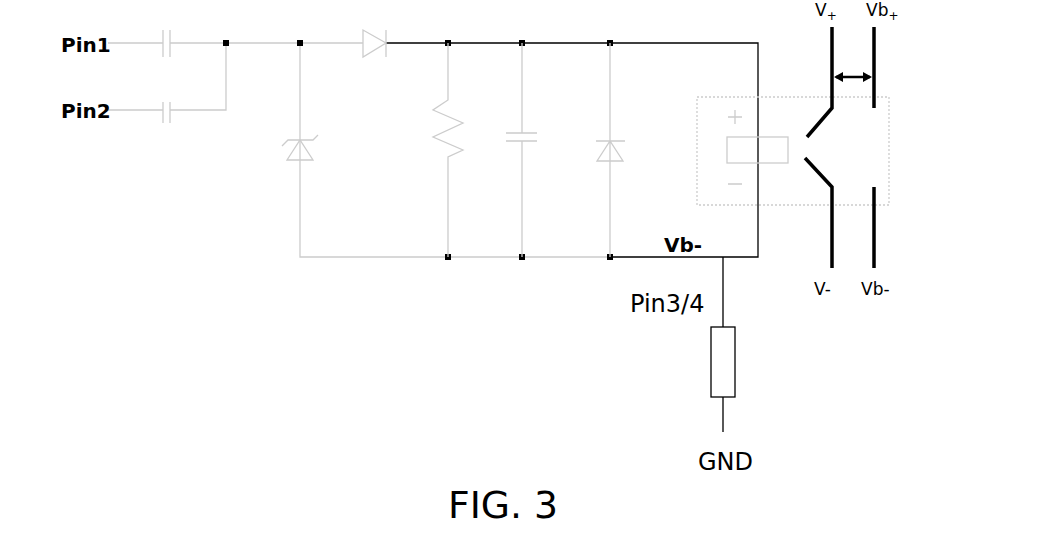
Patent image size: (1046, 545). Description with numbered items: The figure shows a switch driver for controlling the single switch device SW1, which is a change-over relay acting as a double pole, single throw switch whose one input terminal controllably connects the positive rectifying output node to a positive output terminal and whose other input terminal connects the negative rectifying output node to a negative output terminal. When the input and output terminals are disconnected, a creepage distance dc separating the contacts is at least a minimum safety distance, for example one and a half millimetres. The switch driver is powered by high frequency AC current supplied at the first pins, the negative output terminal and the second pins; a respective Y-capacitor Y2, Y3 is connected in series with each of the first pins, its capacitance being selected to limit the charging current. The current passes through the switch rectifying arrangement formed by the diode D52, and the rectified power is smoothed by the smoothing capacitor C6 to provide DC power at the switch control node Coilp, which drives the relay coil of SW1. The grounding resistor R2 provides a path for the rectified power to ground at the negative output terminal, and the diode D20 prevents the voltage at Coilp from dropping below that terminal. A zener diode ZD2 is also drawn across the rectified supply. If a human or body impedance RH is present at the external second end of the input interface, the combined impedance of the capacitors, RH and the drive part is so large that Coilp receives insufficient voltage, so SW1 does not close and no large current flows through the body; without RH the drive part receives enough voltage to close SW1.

The Y-capacitor Y2 is at (164, 32).
The Y-capacitor Y3 is at (164, 99).
The diode D52 is at (373, 32).
The zener diode ZD2 is at (283, 136).
The grounding resistor R2 is at (431, 150).
The smoothing capacitor C6 is at (511, 150).
The diode D20 is at (592, 150).
The switch control node Coilp is at (772, 113).
The single switch device SW1 is at (824, 147).
The creepage distance dc is at (853, 66).
The human/body impedance RH is at (750, 344).